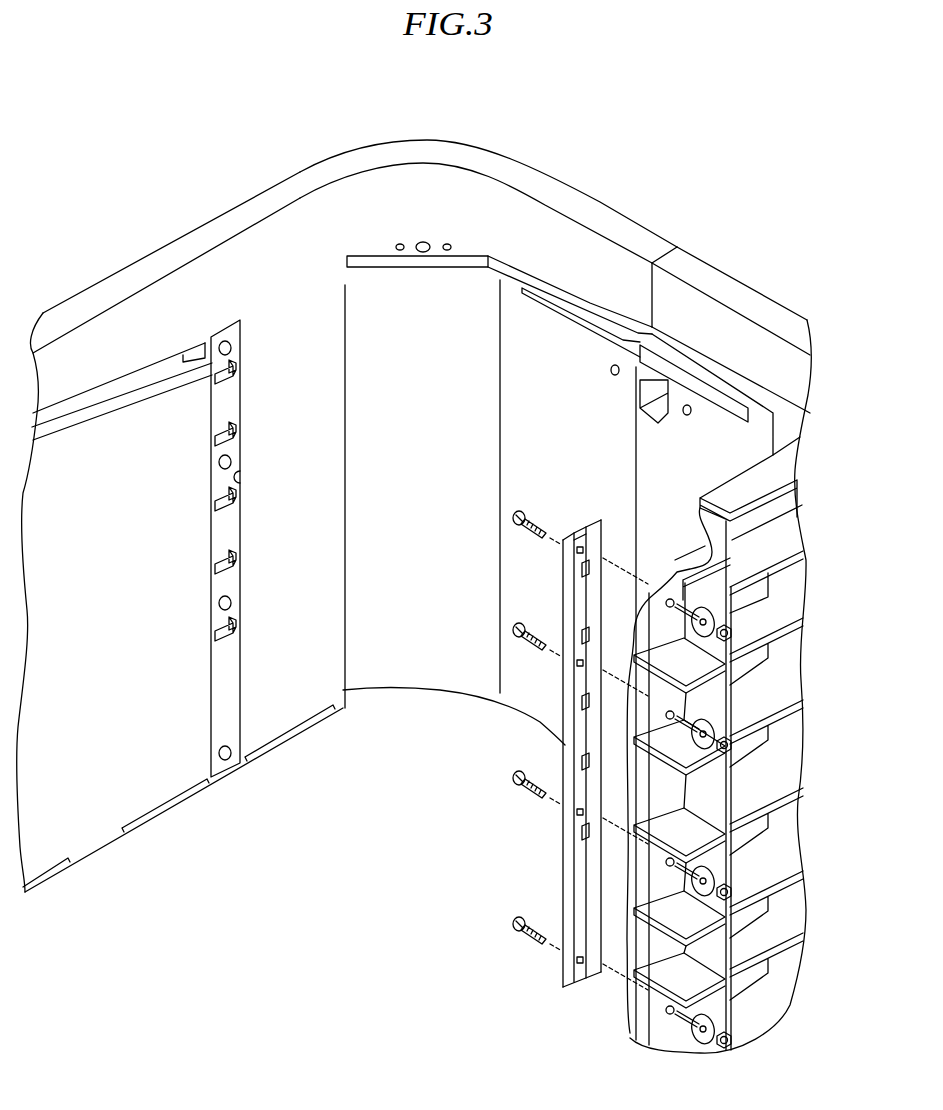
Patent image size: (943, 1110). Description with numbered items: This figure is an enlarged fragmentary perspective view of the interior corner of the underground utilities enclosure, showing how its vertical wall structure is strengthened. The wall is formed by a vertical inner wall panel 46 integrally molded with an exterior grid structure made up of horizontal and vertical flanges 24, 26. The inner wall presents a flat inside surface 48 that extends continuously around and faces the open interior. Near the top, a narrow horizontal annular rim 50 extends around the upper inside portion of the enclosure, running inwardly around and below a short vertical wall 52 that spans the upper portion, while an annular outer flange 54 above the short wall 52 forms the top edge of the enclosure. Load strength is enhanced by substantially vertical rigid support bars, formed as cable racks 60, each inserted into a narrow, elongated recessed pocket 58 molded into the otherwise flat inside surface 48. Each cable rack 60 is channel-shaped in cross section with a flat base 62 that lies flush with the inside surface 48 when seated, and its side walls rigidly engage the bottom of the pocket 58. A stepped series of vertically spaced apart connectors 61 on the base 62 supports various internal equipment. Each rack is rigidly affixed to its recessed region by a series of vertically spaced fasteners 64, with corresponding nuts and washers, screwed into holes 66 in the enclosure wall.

The horizontal flange 24 is at (762, 702).
The vertical flange 26 is at (733, 938).
The vertical inner wall panel 46 is at (643, 888).
The flat inside surface 48 is at (134, 600).
The horizontal annular rim 50 is at (558, 278).
The short vertical wall 52 is at (264, 250).
The annular outer flange 54 is at (697, 268).
The recessed pocket 58 is at (240, 479).
The cable rack 60 is at (196, 683).
The connector 61 is at (228, 434).
The flat base 62 is at (230, 397).
The fastener 64 is at (515, 534).
The hole 66 is at (676, 713).